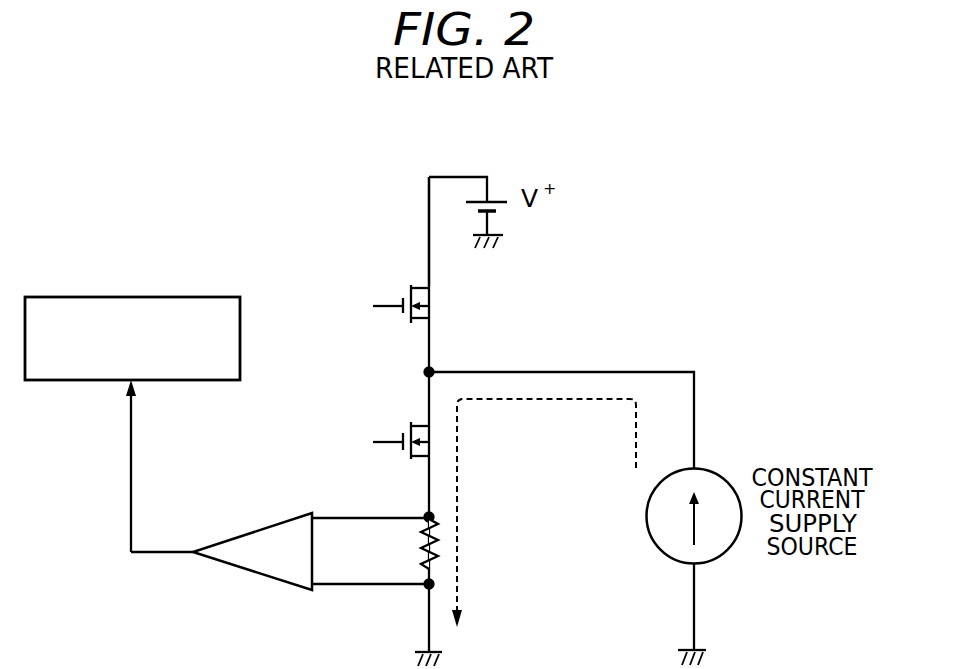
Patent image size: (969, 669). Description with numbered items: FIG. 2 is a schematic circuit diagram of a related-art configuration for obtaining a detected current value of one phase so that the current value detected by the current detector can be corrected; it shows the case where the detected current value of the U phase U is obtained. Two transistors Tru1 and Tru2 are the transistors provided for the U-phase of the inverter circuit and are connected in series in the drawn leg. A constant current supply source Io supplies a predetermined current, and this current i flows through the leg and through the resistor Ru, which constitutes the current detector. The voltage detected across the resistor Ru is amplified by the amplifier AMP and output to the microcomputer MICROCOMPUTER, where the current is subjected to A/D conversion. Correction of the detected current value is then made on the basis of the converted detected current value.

The U phase U is at (407, 231).
The transistor Tru1 is at (401, 286).
The transistor Tru2 is at (401, 423).
The resistor Ru is at (413, 544).
The current i is at (544, 513).
The constant current supply source Io is at (694, 516).
The amplifier AMP is at (280, 551).
The microcomputer MICROCOMPUTER is at (132, 424).